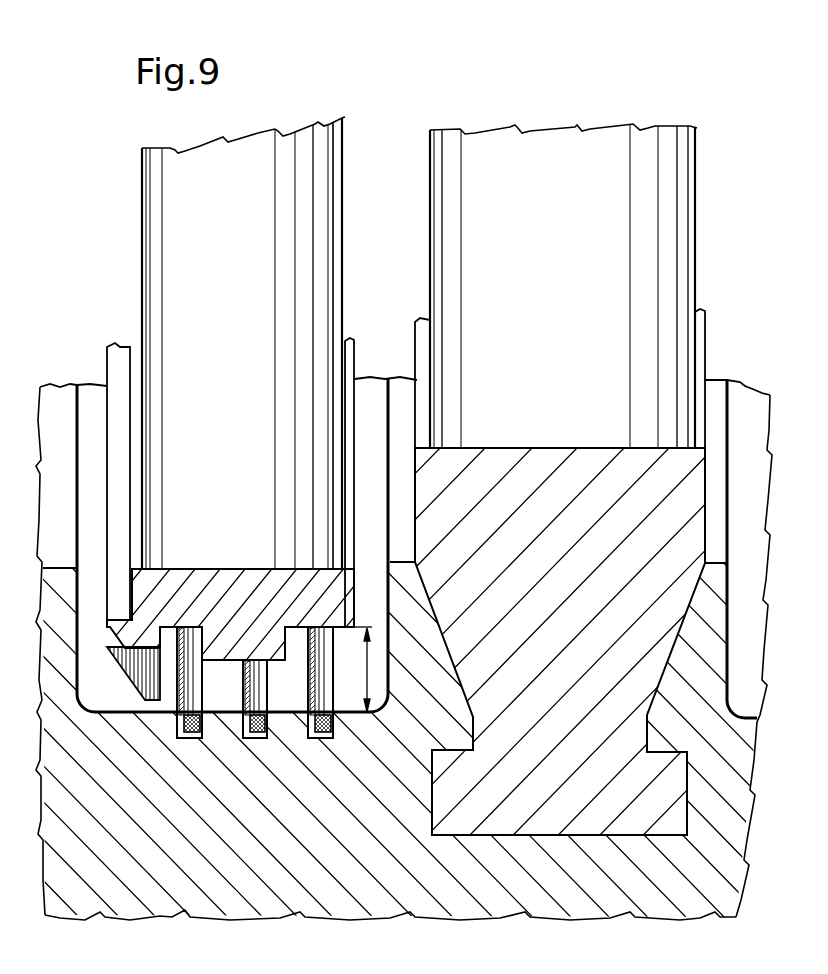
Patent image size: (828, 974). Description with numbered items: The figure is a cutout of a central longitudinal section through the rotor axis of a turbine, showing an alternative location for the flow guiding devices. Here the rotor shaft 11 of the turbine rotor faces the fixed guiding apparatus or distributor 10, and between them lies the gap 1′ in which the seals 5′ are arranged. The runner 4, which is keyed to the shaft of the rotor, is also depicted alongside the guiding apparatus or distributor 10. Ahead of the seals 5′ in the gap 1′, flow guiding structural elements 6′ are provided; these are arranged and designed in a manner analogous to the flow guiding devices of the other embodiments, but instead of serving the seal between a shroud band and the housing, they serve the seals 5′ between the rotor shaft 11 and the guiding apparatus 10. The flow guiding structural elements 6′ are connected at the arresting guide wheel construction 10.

The rotor shaft 11 is at (246, 853).
The guiding apparatus or distributor 10 is at (252, 287).
The runner 4 is at (559, 287).
The flow guiding structural elements 6′ is at (112, 648).
The seals 5′ is at (243, 700).
The gap 1′ is at (365, 674).